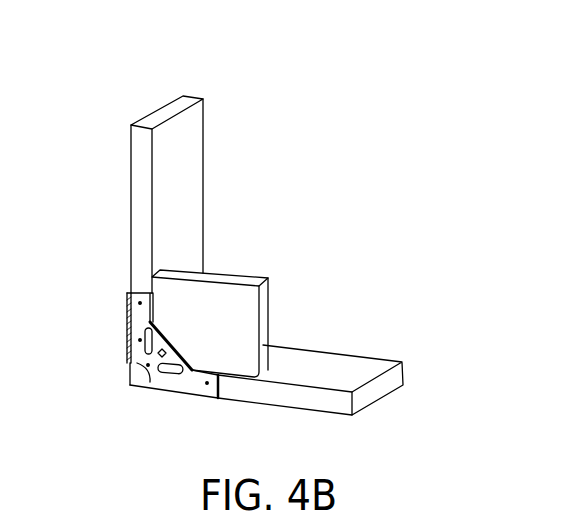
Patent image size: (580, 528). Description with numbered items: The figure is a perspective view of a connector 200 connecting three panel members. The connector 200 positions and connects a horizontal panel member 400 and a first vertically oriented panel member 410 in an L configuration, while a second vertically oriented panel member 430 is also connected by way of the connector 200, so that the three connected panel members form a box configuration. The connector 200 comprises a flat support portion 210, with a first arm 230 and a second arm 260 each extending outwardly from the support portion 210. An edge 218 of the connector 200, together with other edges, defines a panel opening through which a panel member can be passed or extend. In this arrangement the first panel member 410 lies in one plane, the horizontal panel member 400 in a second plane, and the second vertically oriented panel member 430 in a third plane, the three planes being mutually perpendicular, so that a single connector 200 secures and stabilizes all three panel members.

The first vertically oriented panel member 410 is at (175, 163).
The second vertically oriented panel member 430 is at (236, 302).
The horizontal panel member 400 is at (330, 367).
The connector 200 is at (120, 394).
The first arm 230 is at (140, 315).
The edge 218 is at (148, 379).
The flat support portion 210 is at (173, 370).
The second arm 260 is at (190, 398).